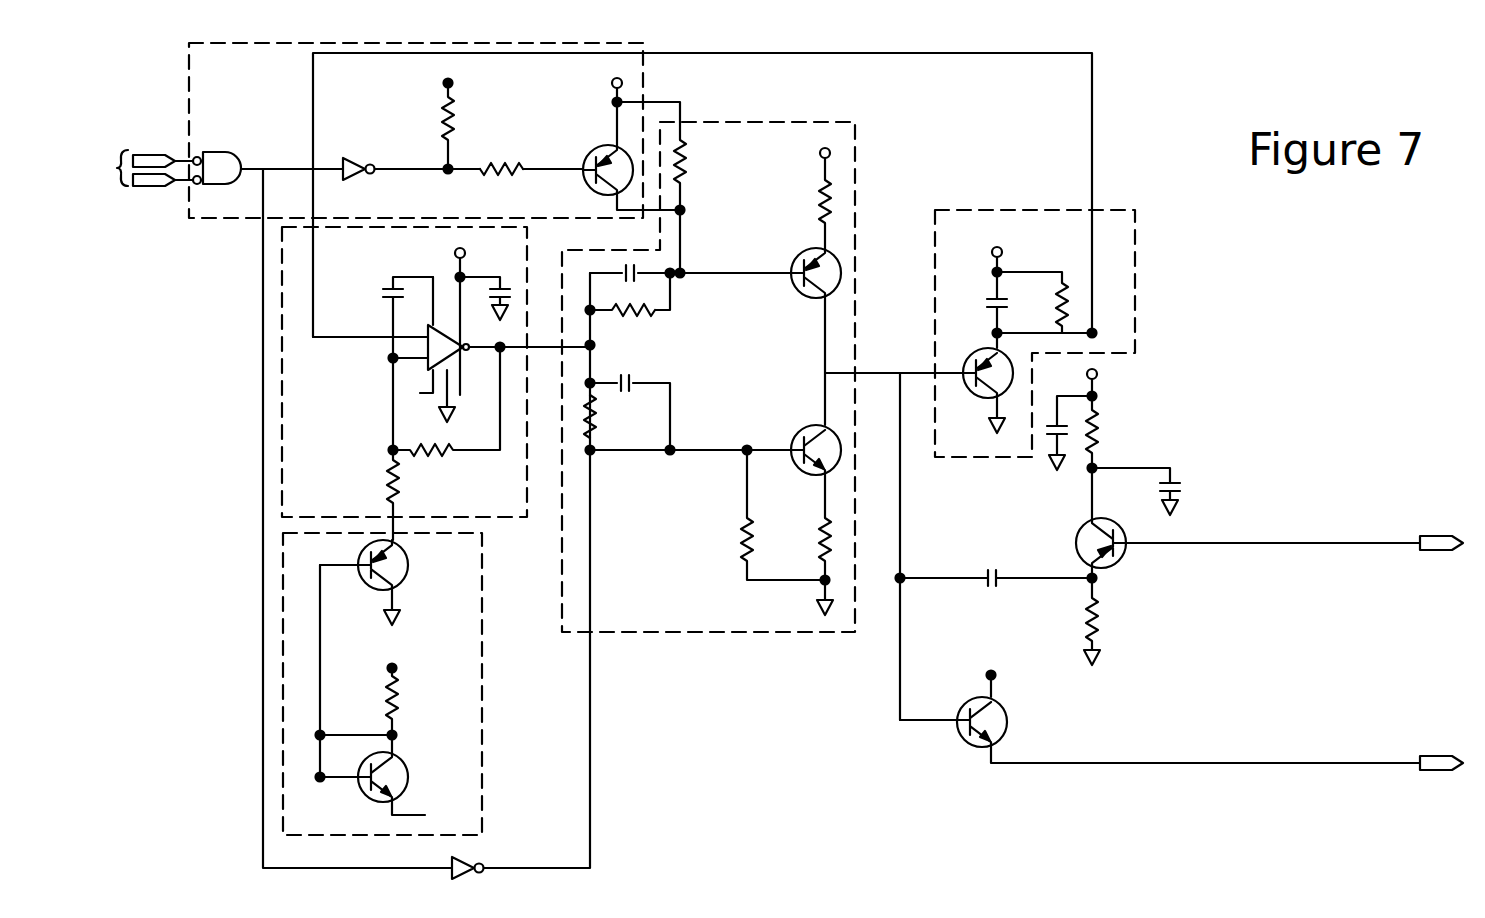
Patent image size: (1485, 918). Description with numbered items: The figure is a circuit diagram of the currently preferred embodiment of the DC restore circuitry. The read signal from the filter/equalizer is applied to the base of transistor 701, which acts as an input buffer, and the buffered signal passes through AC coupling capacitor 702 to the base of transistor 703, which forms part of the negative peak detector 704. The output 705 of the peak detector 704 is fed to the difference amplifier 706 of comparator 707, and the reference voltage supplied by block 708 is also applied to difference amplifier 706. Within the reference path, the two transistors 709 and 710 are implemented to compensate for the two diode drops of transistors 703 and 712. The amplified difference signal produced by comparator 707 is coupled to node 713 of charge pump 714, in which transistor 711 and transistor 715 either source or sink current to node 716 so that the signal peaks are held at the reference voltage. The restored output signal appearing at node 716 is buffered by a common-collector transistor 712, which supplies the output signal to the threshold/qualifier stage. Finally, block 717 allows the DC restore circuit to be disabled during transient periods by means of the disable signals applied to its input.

The transistor 701 is at (1070, 548).
The AC coupling capacitor 702 is at (1003, 573).
The transistor 703 is at (989, 343).
The negative peak detector 704 is at (1059, 333).
The output 705 is at (1002, 52).
The difference amplifier 706 is at (469, 340).
The comparator 707 is at (406, 383).
The block 708 is at (405, 684).
The transistor 709 is at (412, 588).
The transistor 710 is at (417, 794).
The transistor 711 is at (802, 298).
The common-collector transistor 712 is at (1017, 724).
The node 713 is at (598, 348).
The charge pump 714 is at (708, 367).
The transistor 715 is at (810, 422).
The node 716 is at (912, 578).
The block 717 is at (182, 116).